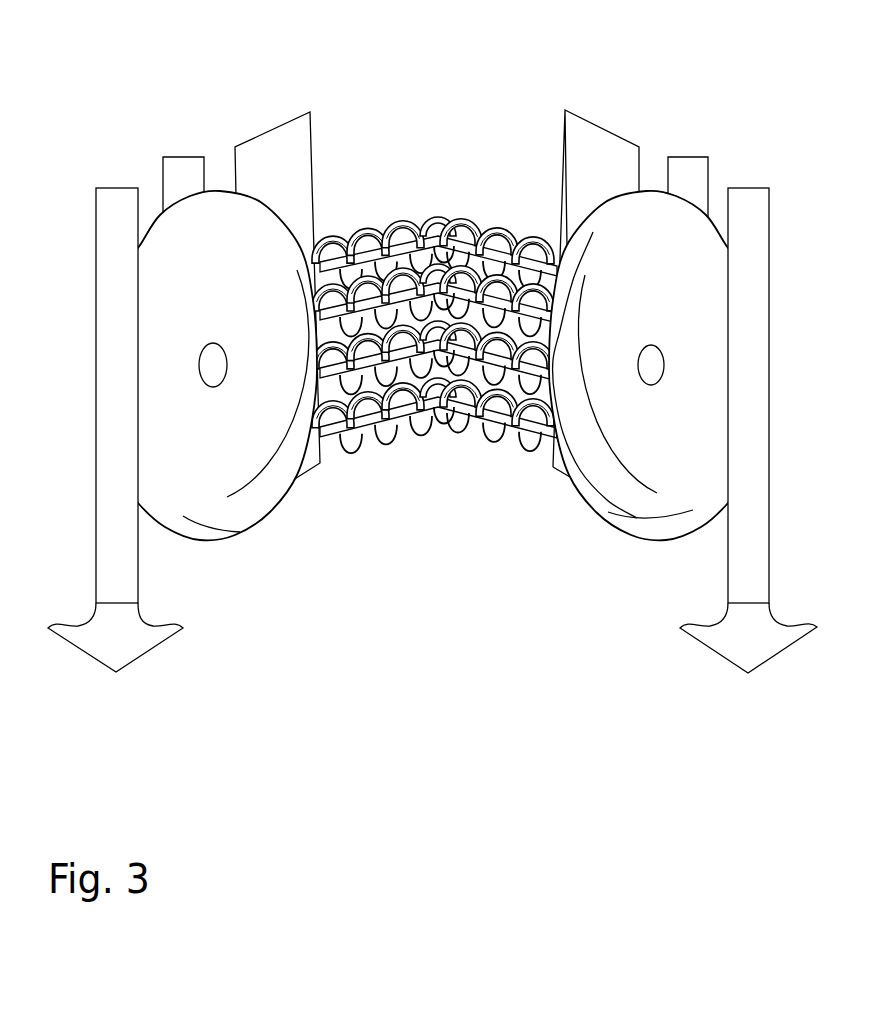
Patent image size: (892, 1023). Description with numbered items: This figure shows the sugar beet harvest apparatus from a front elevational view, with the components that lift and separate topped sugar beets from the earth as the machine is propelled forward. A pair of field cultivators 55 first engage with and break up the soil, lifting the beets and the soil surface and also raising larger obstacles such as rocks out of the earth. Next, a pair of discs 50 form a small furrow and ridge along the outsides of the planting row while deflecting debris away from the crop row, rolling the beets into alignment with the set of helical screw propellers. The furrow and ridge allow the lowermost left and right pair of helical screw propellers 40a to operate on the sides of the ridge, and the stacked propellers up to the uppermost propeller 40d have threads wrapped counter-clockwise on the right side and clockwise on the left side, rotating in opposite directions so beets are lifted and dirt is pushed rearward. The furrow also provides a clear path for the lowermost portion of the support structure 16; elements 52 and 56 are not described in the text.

The support structure 16 is at (585, 134).
The guide element 52 is at (188, 167).
The field cultivators 55 is at (120, 205).
The discs 50 is at (635, 524).
The lowermost left and right pair of helical screw propellers 40a is at (530, 420).
The helical screw propeller 40d is at (557, 250).
The compression direction arrow 56 is at (730, 643).